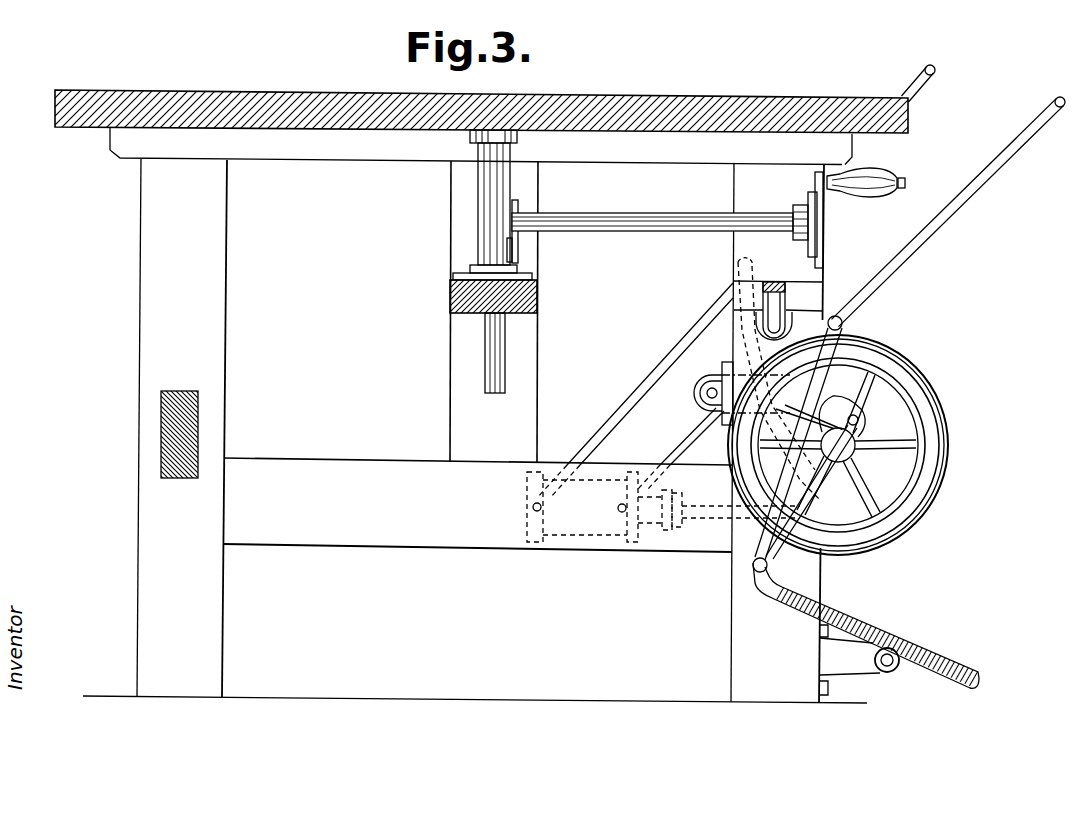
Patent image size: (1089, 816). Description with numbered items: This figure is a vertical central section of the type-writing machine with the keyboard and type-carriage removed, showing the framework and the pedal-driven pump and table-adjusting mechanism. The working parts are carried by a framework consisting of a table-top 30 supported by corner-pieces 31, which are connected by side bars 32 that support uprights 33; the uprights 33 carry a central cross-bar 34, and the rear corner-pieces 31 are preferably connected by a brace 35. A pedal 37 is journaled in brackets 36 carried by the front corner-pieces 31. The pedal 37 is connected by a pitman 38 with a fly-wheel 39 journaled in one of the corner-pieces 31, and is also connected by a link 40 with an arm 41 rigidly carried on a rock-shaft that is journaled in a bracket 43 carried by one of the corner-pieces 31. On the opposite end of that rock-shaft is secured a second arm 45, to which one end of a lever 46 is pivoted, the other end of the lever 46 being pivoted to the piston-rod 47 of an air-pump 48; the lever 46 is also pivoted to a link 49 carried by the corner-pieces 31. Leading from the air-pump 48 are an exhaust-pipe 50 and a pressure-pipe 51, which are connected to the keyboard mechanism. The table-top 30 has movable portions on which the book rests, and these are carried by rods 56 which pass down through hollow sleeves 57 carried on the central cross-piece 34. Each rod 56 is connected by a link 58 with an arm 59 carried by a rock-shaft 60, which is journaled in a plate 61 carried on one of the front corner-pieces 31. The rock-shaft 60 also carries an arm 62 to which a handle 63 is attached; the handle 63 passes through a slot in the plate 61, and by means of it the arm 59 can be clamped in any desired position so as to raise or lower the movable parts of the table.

The table-top 30 is at (349, 97).
The corner-pieces 31 is at (482, 430).
The side bars 32 is at (477, 505).
The uprights 33 is at (494, 311).
The central cross-bar 34 is at (538, 300).
The brace 35 is at (182, 478).
The brackets 36 is at (867, 663).
The pedal 37 is at (907, 638).
The pitman 38 is at (852, 456).
The fly-wheel 39 is at (927, 447).
The link 40 is at (858, 421).
The arm 41 is at (814, 322).
The bracket 43 is at (774, 303).
The second arm 45 is at (733, 278).
The lever 46 is at (790, 352).
The piston-rod 47 is at (707, 524).
The air-pump 48 is at (587, 520).
The link 49 is at (703, 405).
The exhaust-pipe 50 is at (957, 200).
The pressure-pipe 51 is at (645, 383).
The rods 56 is at (490, 360).
The hollow sleeves 57 is at (489, 215).
The link 58 is at (514, 250).
The arm 59 is at (518, 206).
The rock-shaft 60 is at (641, 229).
The plate 61 is at (822, 229).
The arm 62 is at (808, 198).
The handle 63 is at (879, 189).